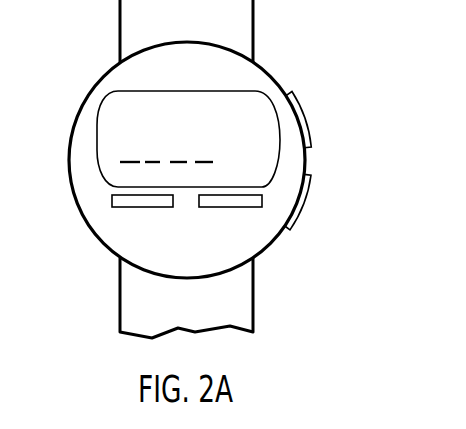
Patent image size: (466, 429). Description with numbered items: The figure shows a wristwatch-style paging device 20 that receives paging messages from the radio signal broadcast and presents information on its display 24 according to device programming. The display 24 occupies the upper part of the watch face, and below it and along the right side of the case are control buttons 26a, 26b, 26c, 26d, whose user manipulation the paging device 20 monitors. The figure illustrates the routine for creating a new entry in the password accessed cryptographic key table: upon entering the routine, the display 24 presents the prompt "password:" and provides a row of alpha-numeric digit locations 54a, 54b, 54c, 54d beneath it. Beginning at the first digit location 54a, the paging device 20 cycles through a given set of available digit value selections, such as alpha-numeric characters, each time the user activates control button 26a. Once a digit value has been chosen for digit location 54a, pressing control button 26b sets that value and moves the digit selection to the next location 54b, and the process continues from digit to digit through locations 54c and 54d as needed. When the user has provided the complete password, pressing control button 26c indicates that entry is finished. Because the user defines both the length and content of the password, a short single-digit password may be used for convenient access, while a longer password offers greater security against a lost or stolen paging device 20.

The paging device 20 is at (95, 86).
The display 24 is at (222, 98).
The control button 26a is at (148, 202).
The control button 26b is at (225, 202).
The control button 26c is at (307, 200).
The control button 26d is at (298, 108).
The alpha-numeric digit location 54a is at (127, 157).
The alpha-numeric digit location 54b is at (146, 164).
The alpha-numeric digit location 54c is at (173, 160).
The alpha-numeric digit location 54d is at (203, 164).